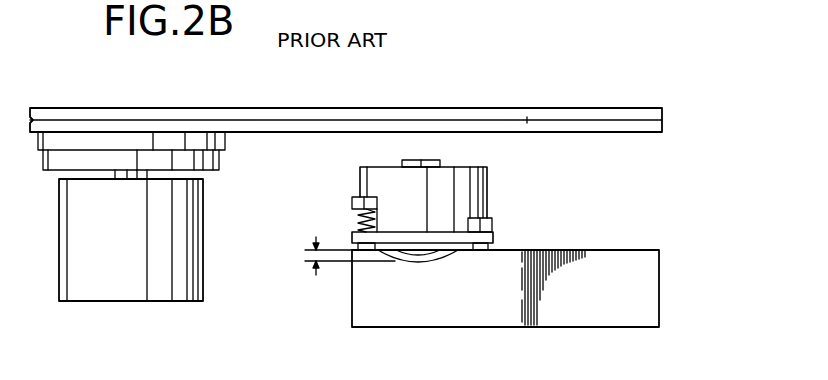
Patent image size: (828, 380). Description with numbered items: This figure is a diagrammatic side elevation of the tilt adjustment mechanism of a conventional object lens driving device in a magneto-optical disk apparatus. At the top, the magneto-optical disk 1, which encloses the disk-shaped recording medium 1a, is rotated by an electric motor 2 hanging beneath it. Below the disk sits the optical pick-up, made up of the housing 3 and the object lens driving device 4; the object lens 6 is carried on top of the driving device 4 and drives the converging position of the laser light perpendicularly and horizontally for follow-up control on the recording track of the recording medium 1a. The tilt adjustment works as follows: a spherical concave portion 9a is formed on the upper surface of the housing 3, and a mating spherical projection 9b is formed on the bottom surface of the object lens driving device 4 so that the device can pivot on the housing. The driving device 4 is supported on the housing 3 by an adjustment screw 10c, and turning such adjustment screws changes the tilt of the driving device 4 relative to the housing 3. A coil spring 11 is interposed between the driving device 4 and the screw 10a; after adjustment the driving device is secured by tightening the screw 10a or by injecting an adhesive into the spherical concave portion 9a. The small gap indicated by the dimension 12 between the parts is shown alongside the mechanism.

The magneto-optical disk 1 is at (600, 108).
The disk-shaped recording medium 1a is at (527, 117).
The electric motor 2 is at (60, 283).
The housing 3 is at (659, 268).
The object lens driving device 4 is at (360, 175).
The object lens 6 is at (414, 160).
The spherical concave portion 9a is at (458, 253).
The spherical projection 9b is at (420, 252).
The screw 10a is at (352, 203).
The adjustment screw 10c is at (493, 217).
The coil spring 11 is at (358, 218).
The gap 12 is at (340, 262).